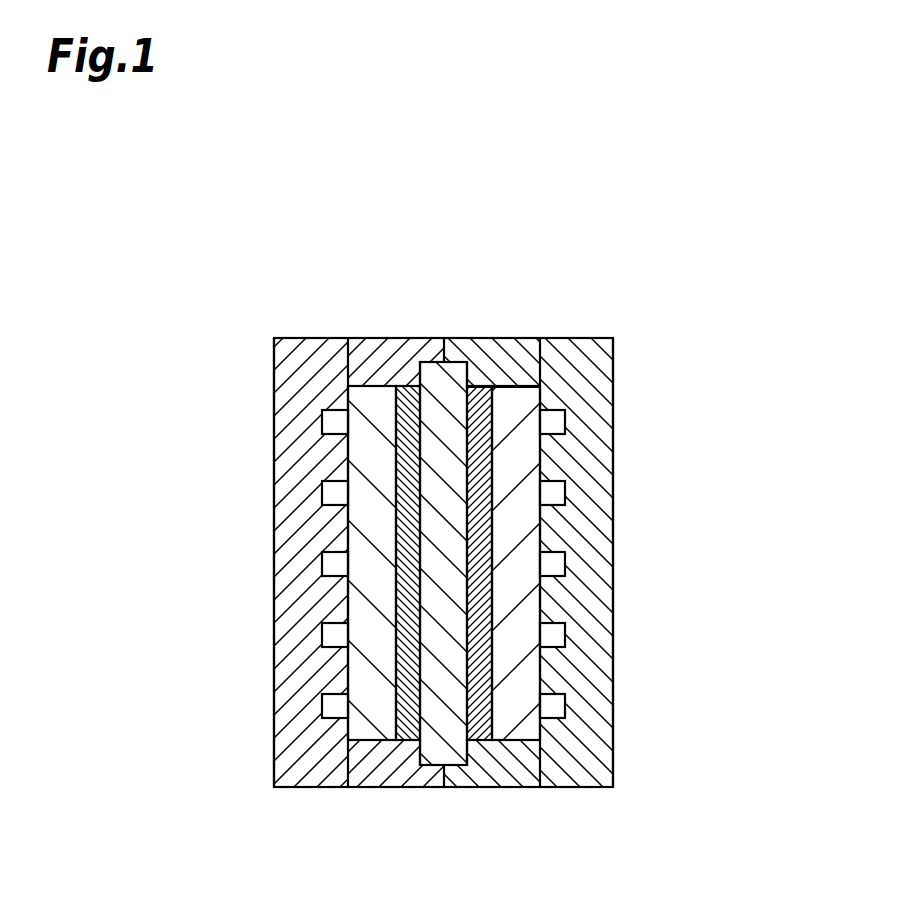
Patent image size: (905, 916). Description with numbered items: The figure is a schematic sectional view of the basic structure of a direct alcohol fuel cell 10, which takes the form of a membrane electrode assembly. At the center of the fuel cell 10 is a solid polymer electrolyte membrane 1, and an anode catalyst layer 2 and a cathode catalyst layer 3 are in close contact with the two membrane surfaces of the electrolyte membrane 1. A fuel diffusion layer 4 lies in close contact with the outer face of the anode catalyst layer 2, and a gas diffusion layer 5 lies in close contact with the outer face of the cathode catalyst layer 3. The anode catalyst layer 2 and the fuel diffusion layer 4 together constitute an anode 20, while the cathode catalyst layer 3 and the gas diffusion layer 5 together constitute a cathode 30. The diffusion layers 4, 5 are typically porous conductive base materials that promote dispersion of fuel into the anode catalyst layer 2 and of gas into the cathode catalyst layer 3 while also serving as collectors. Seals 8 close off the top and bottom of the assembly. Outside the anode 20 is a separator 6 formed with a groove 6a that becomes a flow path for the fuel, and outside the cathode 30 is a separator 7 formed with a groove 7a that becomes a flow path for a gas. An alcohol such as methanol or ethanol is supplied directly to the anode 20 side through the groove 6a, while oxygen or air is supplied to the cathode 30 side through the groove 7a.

The solid polymer electrolyte membrane 1 is at (433, 755).
The anode catalyst layer 2 is at (408, 720).
The cathode catalyst layer 3 is at (478, 720).
The fuel diffusion layer 4 is at (373, 720).
The gas diffusion layer 5 is at (512, 720).
The separator 6 is at (290, 366).
The groove 6a is at (337, 432).
The separator 7 is at (597, 367).
The groove 7a is at (548, 434).
The seals 8 is at (507, 349).
The direct alcohol fuel cell 10 is at (683, 236).
The anode 20 is at (408, 865).
The cathode 30 is at (545, 865).